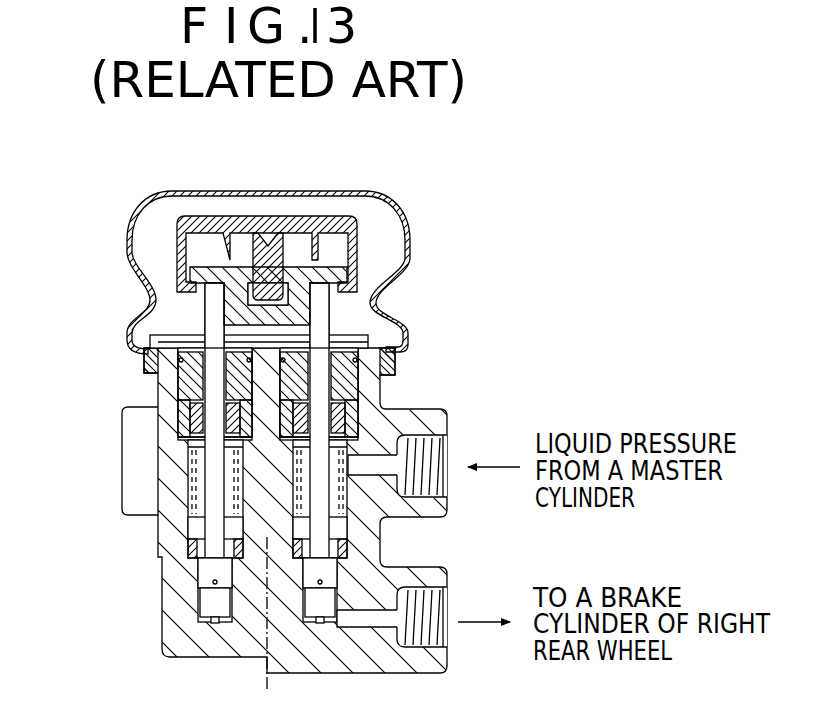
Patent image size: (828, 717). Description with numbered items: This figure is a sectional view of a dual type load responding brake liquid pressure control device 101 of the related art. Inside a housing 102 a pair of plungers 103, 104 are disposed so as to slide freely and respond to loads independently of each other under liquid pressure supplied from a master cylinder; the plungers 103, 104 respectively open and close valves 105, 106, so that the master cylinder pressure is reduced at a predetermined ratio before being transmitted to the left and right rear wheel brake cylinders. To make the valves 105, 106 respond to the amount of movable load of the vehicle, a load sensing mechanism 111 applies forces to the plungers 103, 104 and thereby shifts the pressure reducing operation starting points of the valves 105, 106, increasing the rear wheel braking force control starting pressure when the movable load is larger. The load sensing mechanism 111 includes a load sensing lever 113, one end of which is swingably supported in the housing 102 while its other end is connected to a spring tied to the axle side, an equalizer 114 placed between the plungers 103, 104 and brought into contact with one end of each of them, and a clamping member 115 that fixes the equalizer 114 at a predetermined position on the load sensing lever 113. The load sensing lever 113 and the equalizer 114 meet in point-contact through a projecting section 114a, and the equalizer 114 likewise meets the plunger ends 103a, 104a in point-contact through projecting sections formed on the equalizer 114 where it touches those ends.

The dual type load responding brake liquid pressure control device 101 is at (462, 327).
The housing 102 is at (379, 392).
The plunger 103 is at (323, 402).
The plunger end 103a is at (330, 307).
The plunger 104 is at (214, 402).
The plunger end 104a is at (66, 285).
The valve 105 is at (385, 556).
The valve 106 is at (188, 556).
The load sensing mechanism 111 is at (345, 202).
The load sensing lever 113 is at (288, 262).
The equalizer 114 is at (215, 278).
The projecting section 114a is at (288, 282).
The clamping member 115 is at (243, 222).